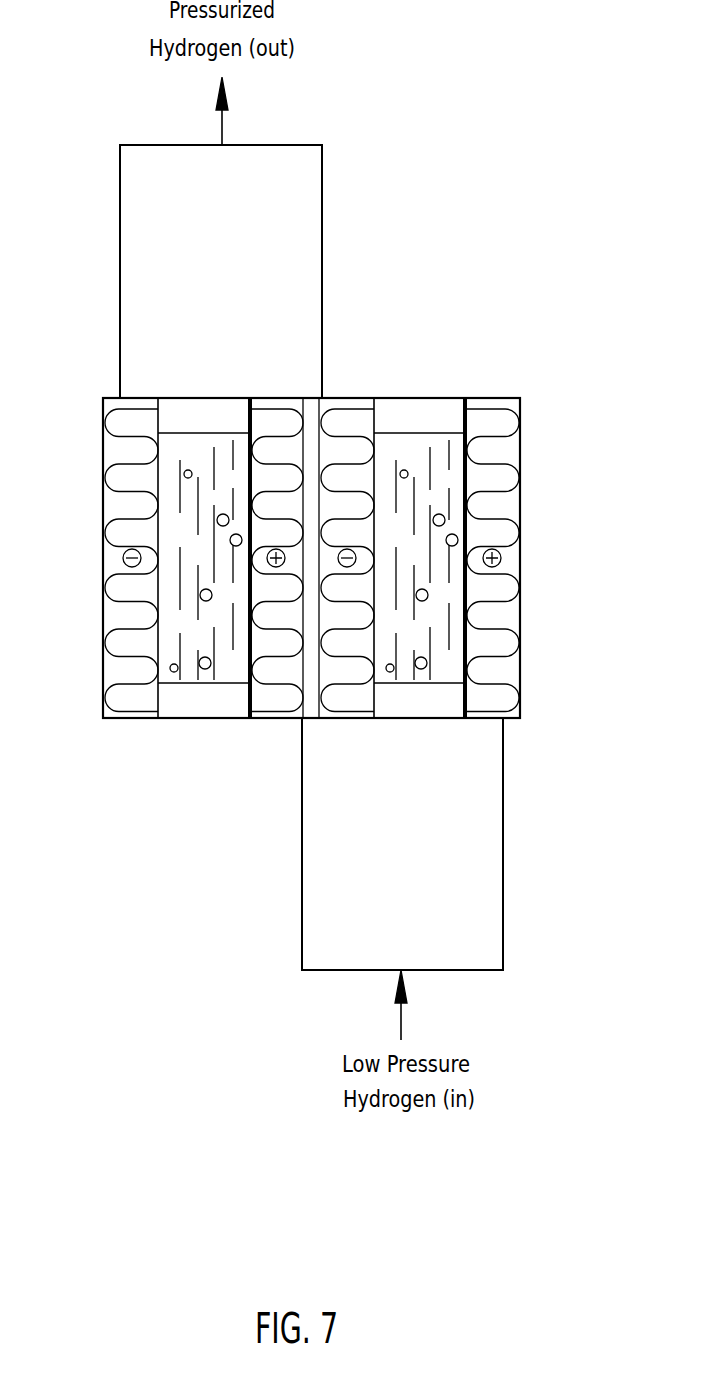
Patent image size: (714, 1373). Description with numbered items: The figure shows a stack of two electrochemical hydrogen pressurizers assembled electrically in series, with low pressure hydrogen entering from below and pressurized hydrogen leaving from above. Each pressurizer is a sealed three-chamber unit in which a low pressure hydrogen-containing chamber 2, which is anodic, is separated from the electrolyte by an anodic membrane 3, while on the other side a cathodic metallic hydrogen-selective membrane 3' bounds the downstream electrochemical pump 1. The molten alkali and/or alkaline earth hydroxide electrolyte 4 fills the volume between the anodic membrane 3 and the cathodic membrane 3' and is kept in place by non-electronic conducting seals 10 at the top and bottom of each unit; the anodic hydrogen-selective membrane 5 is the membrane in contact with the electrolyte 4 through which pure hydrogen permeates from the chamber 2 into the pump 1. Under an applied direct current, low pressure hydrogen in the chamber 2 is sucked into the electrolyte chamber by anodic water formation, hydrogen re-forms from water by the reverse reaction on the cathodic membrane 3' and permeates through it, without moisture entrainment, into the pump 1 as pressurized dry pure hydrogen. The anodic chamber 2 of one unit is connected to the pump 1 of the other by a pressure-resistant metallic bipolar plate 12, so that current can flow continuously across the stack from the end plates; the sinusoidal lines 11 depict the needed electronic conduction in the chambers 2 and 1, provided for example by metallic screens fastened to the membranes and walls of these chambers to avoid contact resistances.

The electrochemical pump 1 is at (355, 420).
The low pressure hydrogen-containing chamber 2 is at (265, 697).
The anodic membrane 3 is at (130, 581).
The cathodic metallic hydrogen-selective membrane 3' is at (343, 582).
The electrolyte 4 is at (168, 502).
The anodic hydrogen-selective membrane 5 is at (258, 416).
The non-electronic conducting seals 10 is at (205, 414).
The sinusoidal lines 11 is at (340, 408).
The pressure-resistant metallic bipolar plate 12 is at (310, 710).